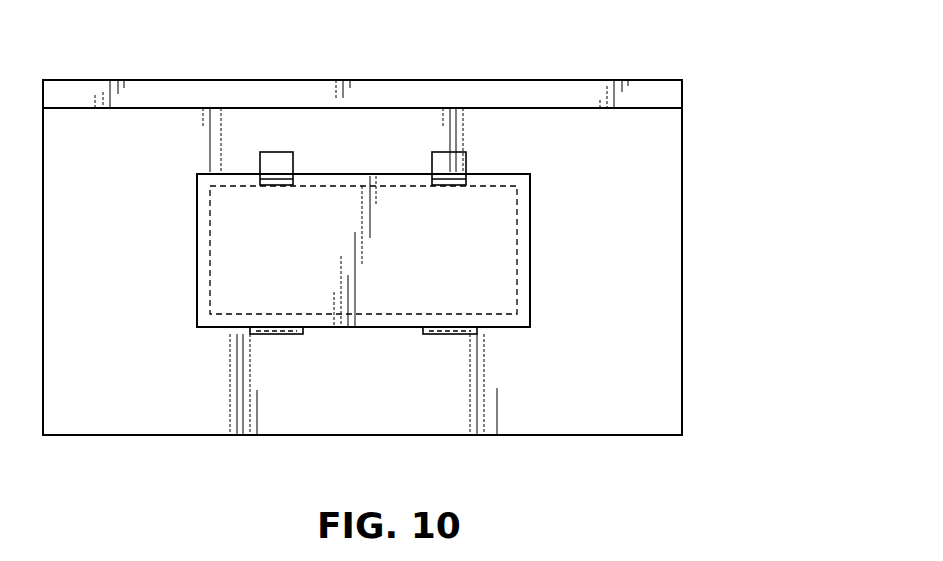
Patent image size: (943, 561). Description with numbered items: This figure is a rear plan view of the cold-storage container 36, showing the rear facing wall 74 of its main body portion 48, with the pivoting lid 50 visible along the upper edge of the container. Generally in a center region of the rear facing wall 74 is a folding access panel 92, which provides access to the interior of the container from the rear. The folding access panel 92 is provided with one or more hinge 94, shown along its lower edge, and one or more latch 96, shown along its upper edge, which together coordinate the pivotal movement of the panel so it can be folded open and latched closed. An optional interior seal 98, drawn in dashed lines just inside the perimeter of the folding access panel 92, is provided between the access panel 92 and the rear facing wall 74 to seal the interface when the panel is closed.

The cold-storage container 36 is at (778, 98).
The main body portion 48 is at (683, 302).
The pivoting lid 50 is at (683, 93).
The rear wall 74 is at (324, 420).
The folding access panel 92 is at (500, 243).
The hinge 94 is at (287, 337).
The latch 96 is at (281, 163).
The interior seal 98 is at (208, 265).